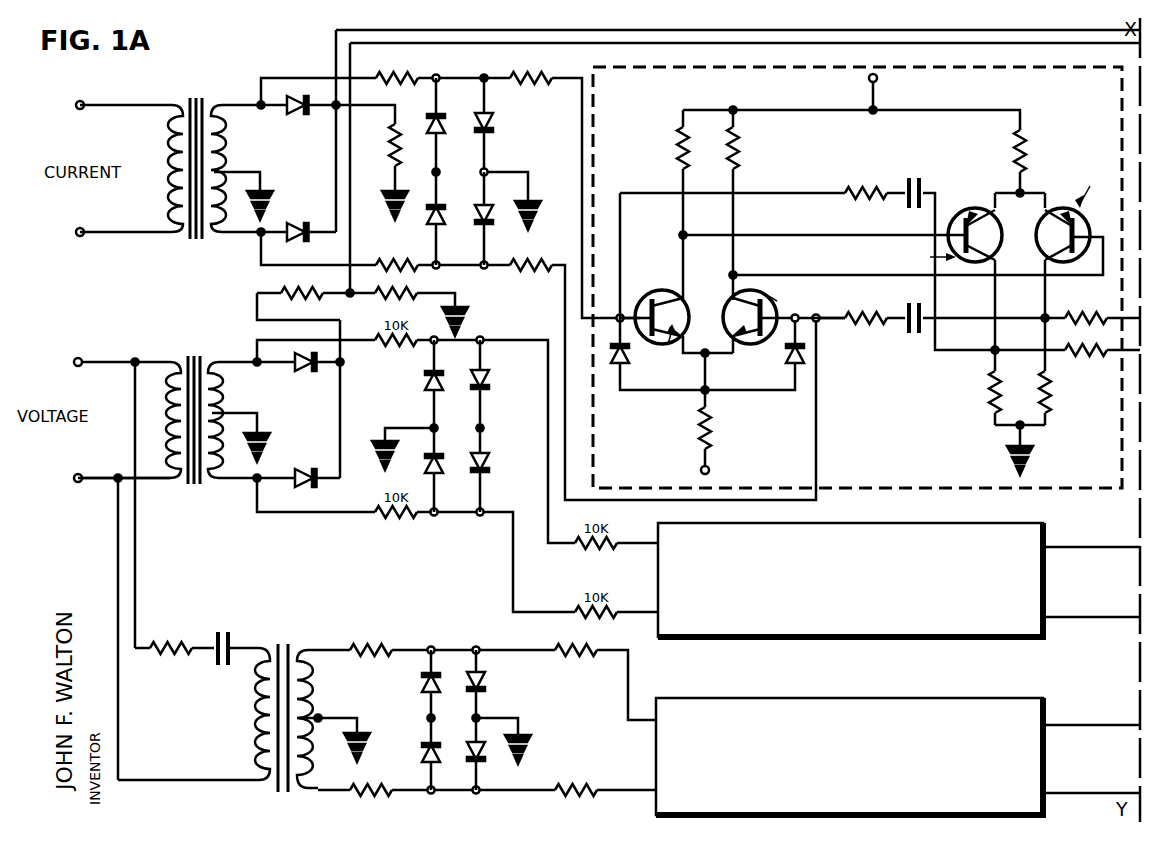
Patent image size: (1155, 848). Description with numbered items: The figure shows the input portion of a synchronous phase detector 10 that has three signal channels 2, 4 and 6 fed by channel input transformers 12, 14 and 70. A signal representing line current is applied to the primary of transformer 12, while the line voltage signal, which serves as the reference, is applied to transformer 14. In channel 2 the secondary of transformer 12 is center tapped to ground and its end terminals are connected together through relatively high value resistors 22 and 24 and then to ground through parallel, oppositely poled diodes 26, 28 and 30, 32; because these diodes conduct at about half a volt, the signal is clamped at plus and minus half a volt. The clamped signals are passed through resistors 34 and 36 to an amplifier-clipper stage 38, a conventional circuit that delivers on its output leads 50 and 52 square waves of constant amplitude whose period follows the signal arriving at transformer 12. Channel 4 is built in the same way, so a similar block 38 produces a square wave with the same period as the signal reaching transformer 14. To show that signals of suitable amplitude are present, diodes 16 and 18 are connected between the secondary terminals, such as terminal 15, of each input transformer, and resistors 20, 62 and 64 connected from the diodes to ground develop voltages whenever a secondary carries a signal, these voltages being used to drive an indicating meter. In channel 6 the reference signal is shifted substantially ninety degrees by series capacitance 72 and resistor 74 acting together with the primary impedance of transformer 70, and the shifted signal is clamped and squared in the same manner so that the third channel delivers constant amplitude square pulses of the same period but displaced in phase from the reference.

The signal channel 2 is at (266, 62).
The signal channel 4 is at (246, 350).
The signal channel 6 is at (377, 632).
The synchronous phase detector 10 is at (112, 295).
The channel input transformer 12 is at (200, 92).
The channel input transformer 14 is at (190, 350).
The terminal 15 is at (256, 238).
The diode 16 is at (297, 115).
The diode 18 is at (298, 222).
The resistor 20 is at (392, 148).
The resistor 22 is at (384, 78).
The resistor 24 is at (382, 262).
The diode 26 is at (441, 118).
The diode 28 is at (492, 125).
The diode 30 is at (441, 223).
The diode 32 is at (488, 220).
The resistor 34 is at (534, 88).
The resistor 36 is at (530, 275).
The amplifier-clipper stage 38 is at (658, 102).
The output lead 50 is at (1133, 320).
The output lead 52 is at (1134, 353).
The resistor 62 is at (292, 292).
The resistor 64 is at (398, 294).
The channel input transformer 70 is at (284, 636).
The series capacitance 72 is at (228, 632).
The resistor 74 is at (178, 644).